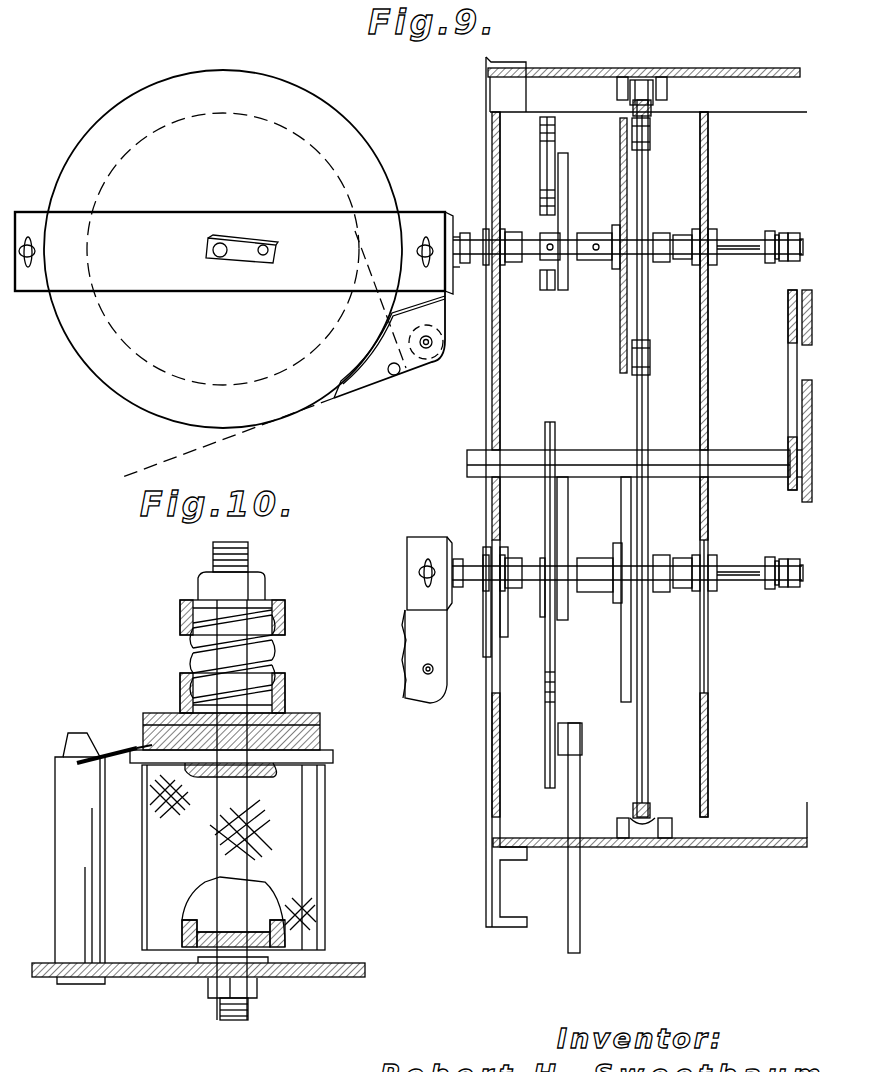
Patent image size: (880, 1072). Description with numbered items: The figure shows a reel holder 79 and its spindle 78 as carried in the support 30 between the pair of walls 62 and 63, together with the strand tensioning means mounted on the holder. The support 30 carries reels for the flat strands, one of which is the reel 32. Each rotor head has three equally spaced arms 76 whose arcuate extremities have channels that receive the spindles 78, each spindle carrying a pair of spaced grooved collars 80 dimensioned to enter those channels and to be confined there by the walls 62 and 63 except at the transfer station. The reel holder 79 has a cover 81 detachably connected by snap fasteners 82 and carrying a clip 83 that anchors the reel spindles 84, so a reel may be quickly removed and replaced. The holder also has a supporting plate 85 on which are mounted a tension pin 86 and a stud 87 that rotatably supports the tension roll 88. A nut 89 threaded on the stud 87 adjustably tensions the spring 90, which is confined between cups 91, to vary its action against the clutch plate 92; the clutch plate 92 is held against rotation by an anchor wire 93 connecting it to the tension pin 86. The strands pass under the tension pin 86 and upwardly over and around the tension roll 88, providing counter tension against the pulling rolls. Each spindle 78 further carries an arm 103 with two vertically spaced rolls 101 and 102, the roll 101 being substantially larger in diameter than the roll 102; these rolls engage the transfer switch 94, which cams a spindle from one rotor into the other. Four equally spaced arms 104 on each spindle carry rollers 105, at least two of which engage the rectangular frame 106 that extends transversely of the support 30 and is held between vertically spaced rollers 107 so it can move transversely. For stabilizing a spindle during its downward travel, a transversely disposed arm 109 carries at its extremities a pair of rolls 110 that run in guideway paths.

In FIG. 9, the support 30 is at (549, 856).
In FIG. 9, the reel 32 is at (330, 122).
In FIG. 9, the wall 62 is at (493, 163).
In FIG. 9, the wall 63 is at (710, 167).
In FIG. 9, the arm 76 is at (710, 367).
In FIG. 9, the spindle 78 is at (740, 244).
In FIG. 9, the reel holder 79 is at (449, 276).
In FIG. 9, the grooved collar 80 is at (505, 230).
In FIG. 9, the cover 81 is at (333, 224).
In FIG. 9, the snap fastener 82 is at (30, 244).
In FIG. 9, the clip 83 is at (248, 245).
In FIG. 9, the reel spindle 84 is at (217, 253).
In FIG. 9, the supporting plate 85 is at (379, 370).
In FIG. 10, the supporting plate 85 is at (320, 970).
In FIG. 9, the tension pin 86 is at (399, 376).
In FIG. 10, the tension pin 86 is at (67, 847).
In FIG. 9, the stud 87 is at (430, 352).
In FIG. 10, the stud 87 is at (230, 903).
In FIG. 9, the tension roll 88 is at (447, 342).
In FIG. 10, the tension roll 88 is at (305, 847).
In FIG. 10, the nut 89 is at (201, 583).
In FIG. 10, the spring 90 is at (258, 668).
In FIG. 10, the cup 91 is at (182, 683).
In FIG. 10, the clutch plate 92 is at (315, 740).
In FIG. 10, the anchor wire 93 is at (128, 747).
In FIG. 9, the transfer switch 94 is at (558, 718).
In FIG. 9, the roll 101 is at (551, 133).
In FIG. 9, the roll 102 is at (542, 284).
In FIG. 9, the arm 103 is at (565, 215).
In FIG. 9, the arm 104 is at (627, 172).
In FIG. 9, the roller 105 is at (646, 134).
In FIG. 9, the rectangular frame 106 is at (650, 108).
In FIG. 9, the roller 107 is at (650, 79).
In FIG. 9, the arm 109 is at (770, 260).
In FIG. 9, the roll 110 is at (790, 233).